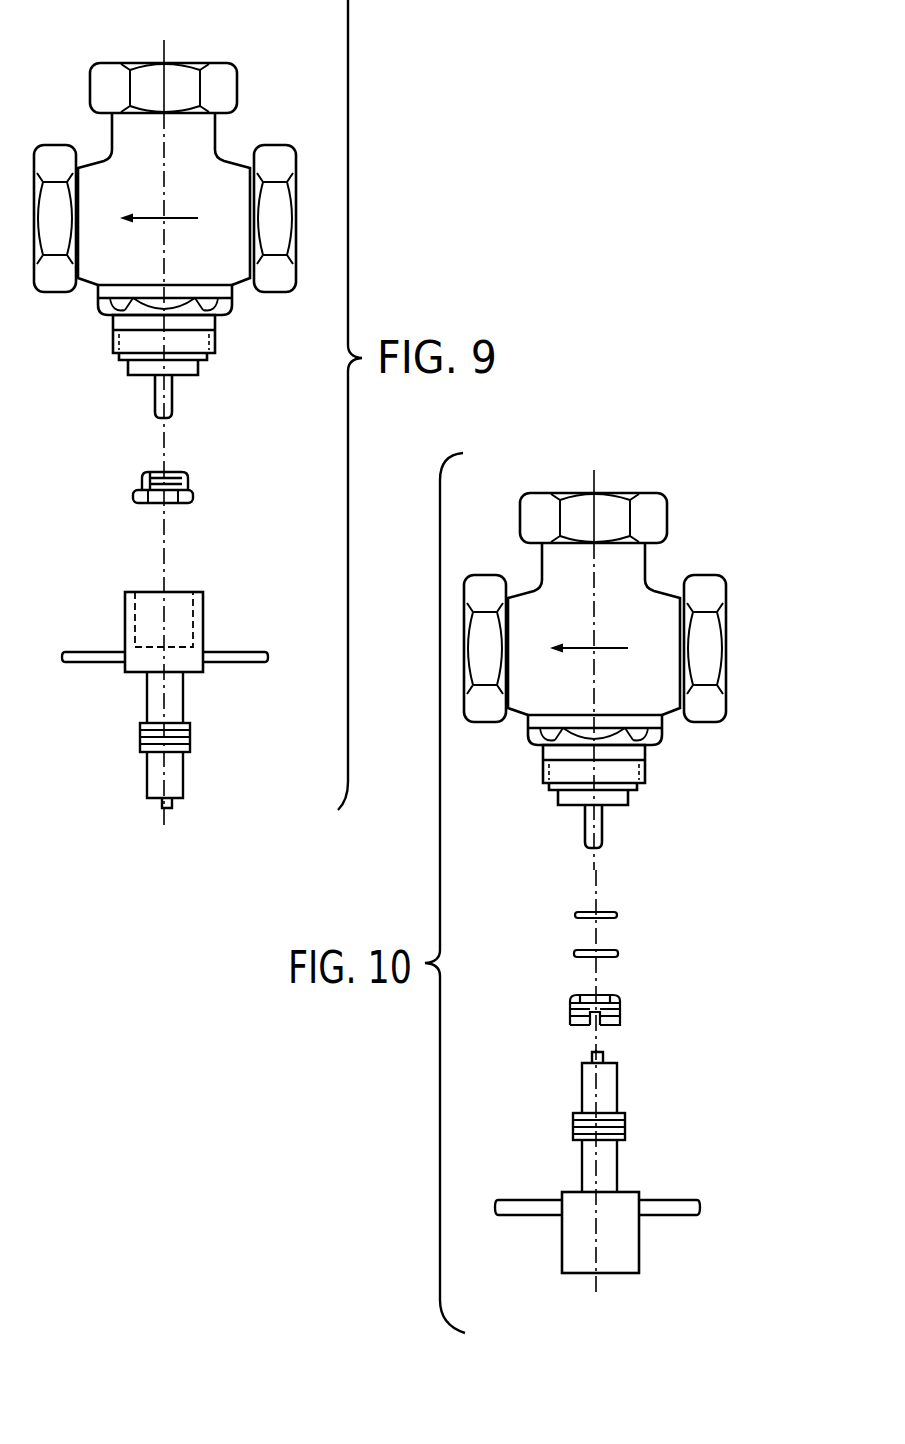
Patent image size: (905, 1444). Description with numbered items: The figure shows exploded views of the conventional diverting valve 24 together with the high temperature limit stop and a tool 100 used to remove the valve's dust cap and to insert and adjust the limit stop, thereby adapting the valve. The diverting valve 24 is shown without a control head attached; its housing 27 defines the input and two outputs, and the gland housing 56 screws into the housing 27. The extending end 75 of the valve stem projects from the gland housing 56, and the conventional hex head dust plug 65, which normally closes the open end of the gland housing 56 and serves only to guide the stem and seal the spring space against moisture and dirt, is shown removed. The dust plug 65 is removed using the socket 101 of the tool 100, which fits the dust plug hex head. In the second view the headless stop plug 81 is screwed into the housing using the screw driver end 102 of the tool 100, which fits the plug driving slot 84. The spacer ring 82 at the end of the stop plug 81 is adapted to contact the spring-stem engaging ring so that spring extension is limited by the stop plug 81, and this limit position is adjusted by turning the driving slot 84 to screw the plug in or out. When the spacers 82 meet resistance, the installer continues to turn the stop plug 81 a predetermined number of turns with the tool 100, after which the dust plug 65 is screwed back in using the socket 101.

In FIG. 9, the diverting valve 24 is at (268, 68).
In FIG. 10, the diverting valve 24 is at (614, 582).
In FIG. 9, the valve housing 27 is at (214, 164).
In FIG. 10, the valve housing 27 is at (622, 620).
In FIG. 9, the gland housing 56 is at (213, 338).
In FIG. 10, the gland housing 56 is at (632, 775).
In FIG. 9, the extending end of the stem 75 is at (173, 397).
In FIG. 10, the extending end of the stem 75 is at (635, 826).
In FIG. 9, the hex head dust plug 65 is at (195, 498).
In FIG. 10, the headless stop plug 81 is at (620, 1005).
In FIG. 10, the spacer ring 82 is at (617, 915).
In FIG. 10, the stop plug driving slot 84 is at (602, 1022).
In FIG. 9, the tool 100 is at (108, 602).
In FIG. 10, the tool 100 is at (662, 1269).
In FIG. 9, the socket 101 is at (205, 600).
In FIG. 10, the socket 101 is at (562, 1263).
In FIG. 9, the screw driver end 102 is at (185, 770).
In FIG. 10, the screw driver end 102 is at (582, 1090).